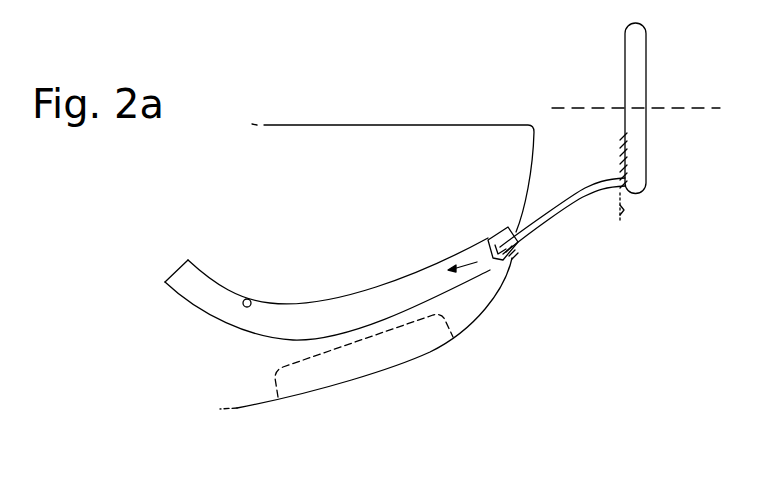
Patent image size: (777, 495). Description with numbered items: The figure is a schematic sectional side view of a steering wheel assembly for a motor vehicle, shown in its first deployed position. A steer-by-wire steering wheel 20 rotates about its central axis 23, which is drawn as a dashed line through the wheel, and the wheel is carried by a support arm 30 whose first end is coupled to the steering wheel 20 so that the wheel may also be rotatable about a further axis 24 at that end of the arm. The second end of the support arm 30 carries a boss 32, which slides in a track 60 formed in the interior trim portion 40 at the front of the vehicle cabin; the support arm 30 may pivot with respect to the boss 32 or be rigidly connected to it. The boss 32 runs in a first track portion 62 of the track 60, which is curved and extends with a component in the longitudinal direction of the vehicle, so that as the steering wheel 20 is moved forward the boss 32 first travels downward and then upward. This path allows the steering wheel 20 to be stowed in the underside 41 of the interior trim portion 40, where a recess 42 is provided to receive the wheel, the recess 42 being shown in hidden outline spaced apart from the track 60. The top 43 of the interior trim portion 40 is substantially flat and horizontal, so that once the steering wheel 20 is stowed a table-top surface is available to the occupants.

The steering wheel 20 is at (637, 137).
The central axis 23 is at (680, 108).
The further axis 24 is at (624, 210).
The support arm 30 is at (563, 212).
The boss 32 is at (508, 263).
The interior trim portion 40 is at (384, 150).
The underside 41 is at (480, 323).
The recess 42 is at (258, 400).
The top 43 is at (294, 125).
The track 60 is at (410, 276).
The first track portion 62 is at (254, 300).